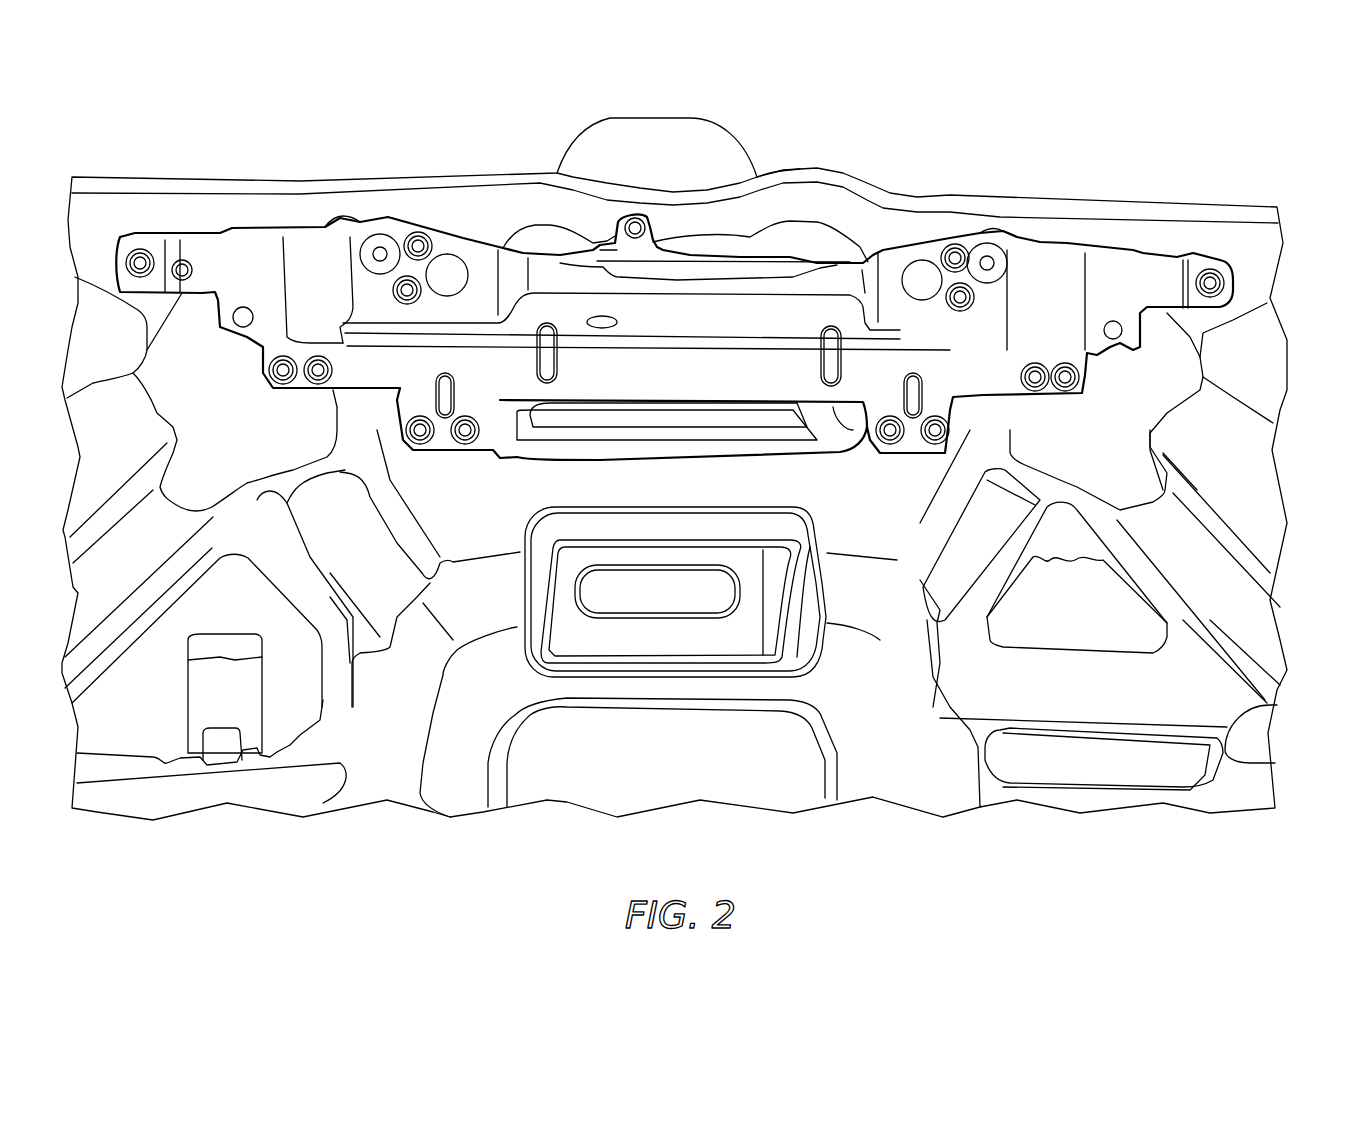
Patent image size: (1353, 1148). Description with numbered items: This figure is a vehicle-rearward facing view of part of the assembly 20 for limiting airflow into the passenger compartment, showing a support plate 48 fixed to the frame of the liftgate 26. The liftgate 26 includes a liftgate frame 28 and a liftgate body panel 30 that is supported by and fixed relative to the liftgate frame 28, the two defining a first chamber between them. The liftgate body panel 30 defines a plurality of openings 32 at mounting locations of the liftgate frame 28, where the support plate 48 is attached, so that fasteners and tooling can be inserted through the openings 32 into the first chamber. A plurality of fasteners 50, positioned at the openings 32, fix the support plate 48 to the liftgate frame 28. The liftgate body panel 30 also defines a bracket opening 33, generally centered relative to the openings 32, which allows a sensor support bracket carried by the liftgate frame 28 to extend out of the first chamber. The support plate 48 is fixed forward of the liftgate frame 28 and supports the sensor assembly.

The assembly 20 is at (765, 130).
The liftgate 26 is at (1238, 185).
The liftgate frame 28 is at (1227, 473).
The liftgate body panel 30 is at (708, 645).
The openings 32 is at (340, 220).
The bracket opening 33 is at (827, 223).
The support plate 48 is at (1062, 268).
The fasteners 50 is at (378, 248).